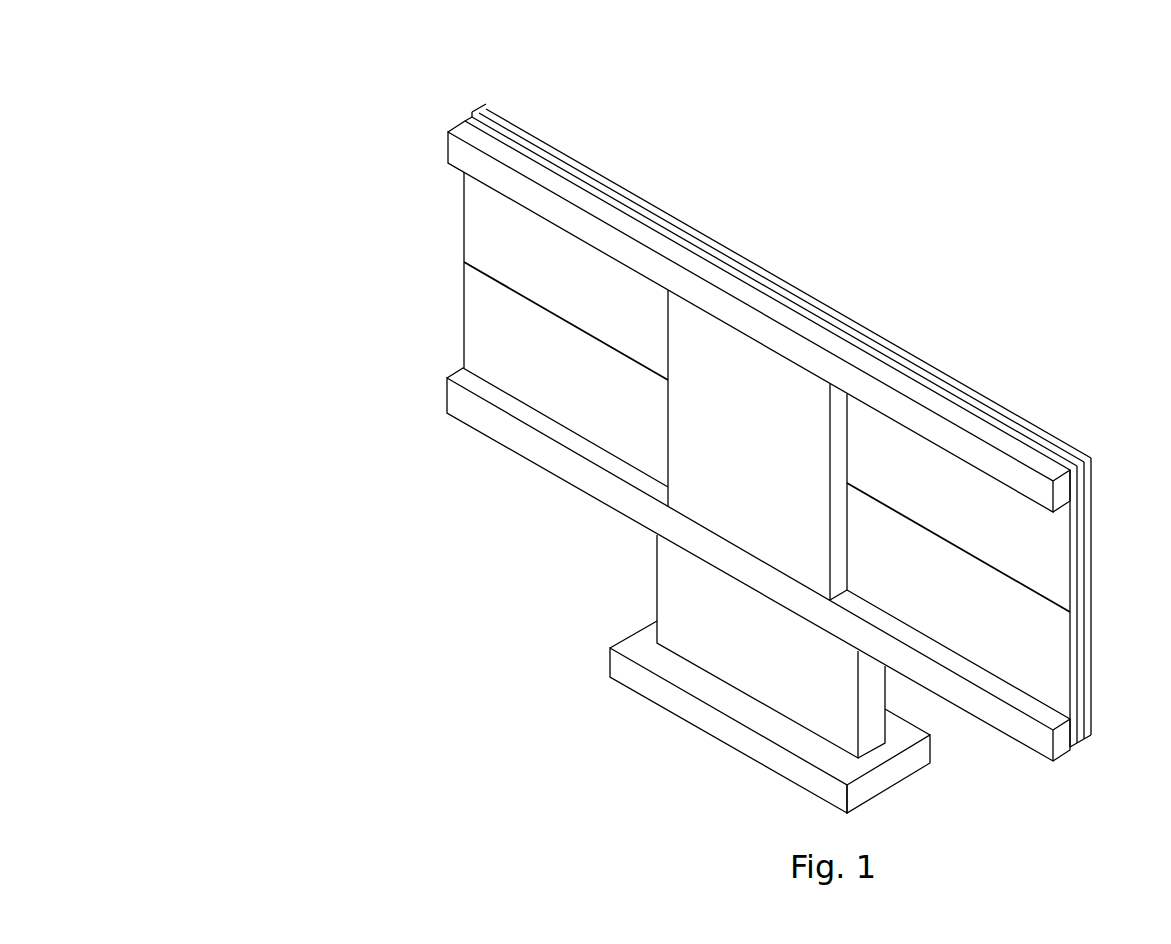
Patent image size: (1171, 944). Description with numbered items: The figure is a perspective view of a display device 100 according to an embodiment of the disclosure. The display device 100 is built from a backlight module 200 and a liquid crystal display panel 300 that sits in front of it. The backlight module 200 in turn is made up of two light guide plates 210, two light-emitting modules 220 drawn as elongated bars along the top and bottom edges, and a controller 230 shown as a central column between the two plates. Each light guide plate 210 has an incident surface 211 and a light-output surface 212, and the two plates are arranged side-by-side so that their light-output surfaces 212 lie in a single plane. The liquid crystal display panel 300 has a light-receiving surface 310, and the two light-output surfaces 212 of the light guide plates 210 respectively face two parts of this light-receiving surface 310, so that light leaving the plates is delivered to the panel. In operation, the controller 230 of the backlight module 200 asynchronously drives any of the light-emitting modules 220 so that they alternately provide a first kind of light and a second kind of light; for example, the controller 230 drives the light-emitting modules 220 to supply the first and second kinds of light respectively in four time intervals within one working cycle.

The display device 100 is at (273, 56).
The backlight module 200 is at (412, 122).
The light guide plate 210 is at (1063, 577).
The incident surface 211 is at (1007, 433).
The light-output surface 212 is at (1097, 549).
The light-emitting module 220 is at (1062, 487).
The controller 230 is at (688, 435).
The liquid crystal display panel 300 is at (940, 369).
The light-receiving surface 310 is at (1082, 510).